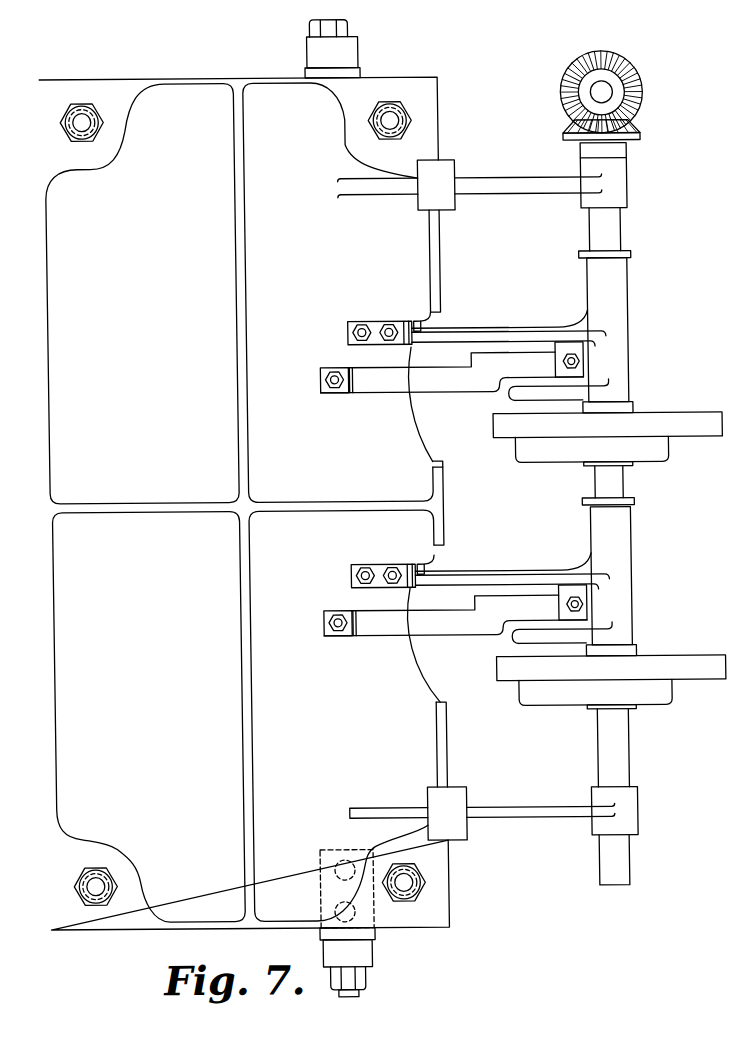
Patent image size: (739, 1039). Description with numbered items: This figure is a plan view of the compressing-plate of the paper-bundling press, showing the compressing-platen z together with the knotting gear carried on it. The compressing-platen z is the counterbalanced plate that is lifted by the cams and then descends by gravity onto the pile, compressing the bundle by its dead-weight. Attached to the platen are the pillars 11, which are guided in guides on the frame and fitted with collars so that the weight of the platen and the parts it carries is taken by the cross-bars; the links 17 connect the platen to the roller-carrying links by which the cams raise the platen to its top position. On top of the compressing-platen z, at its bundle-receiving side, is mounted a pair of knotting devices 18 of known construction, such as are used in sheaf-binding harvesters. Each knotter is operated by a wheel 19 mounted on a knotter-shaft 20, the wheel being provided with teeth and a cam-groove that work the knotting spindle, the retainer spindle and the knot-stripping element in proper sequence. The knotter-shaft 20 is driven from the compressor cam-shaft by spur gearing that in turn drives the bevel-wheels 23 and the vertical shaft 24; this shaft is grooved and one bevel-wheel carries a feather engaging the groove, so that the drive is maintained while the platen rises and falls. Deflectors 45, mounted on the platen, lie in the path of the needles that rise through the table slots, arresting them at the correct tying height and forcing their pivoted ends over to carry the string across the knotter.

The pillars 11 is at (388, 120).
The links 17 is at (345, 55).
The knotting devices 18 is at (621, 318).
The wheel 19 is at (701, 428).
The knotter-shaft 20 is at (605, 486).
The bevel-wheels 23 is at (633, 130).
The vertical shaft 24 is at (600, 94).
The deflectors 45 is at (431, 386).
The compressing-platen Z is at (327, 503).